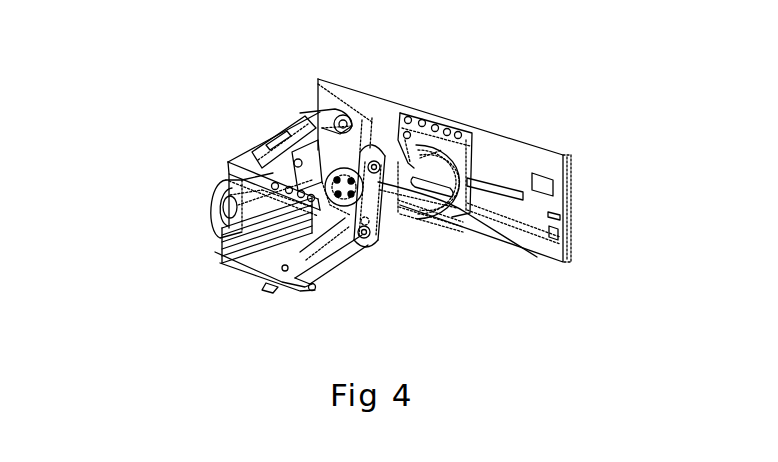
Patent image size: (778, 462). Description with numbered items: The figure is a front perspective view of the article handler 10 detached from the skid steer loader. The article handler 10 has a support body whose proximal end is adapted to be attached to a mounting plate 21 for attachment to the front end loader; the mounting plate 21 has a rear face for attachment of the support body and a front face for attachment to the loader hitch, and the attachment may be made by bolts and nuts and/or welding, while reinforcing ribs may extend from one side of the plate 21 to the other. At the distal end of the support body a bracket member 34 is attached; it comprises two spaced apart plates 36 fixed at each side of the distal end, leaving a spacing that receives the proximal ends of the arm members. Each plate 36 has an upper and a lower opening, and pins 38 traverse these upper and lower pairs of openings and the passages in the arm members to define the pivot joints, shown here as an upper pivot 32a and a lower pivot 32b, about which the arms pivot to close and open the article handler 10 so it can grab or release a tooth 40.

The article handler 10 is at (232, 144).
The mounting plate 21 is at (562, 198).
The upper pivot 32a is at (368, 192).
The lower pivot 32b is at (365, 185).
The bracket member 34 is at (537, 257).
The plates 36 is at (365, 185).
The pins 38 is at (378, 158).
The tooth 40 is at (213, 209).